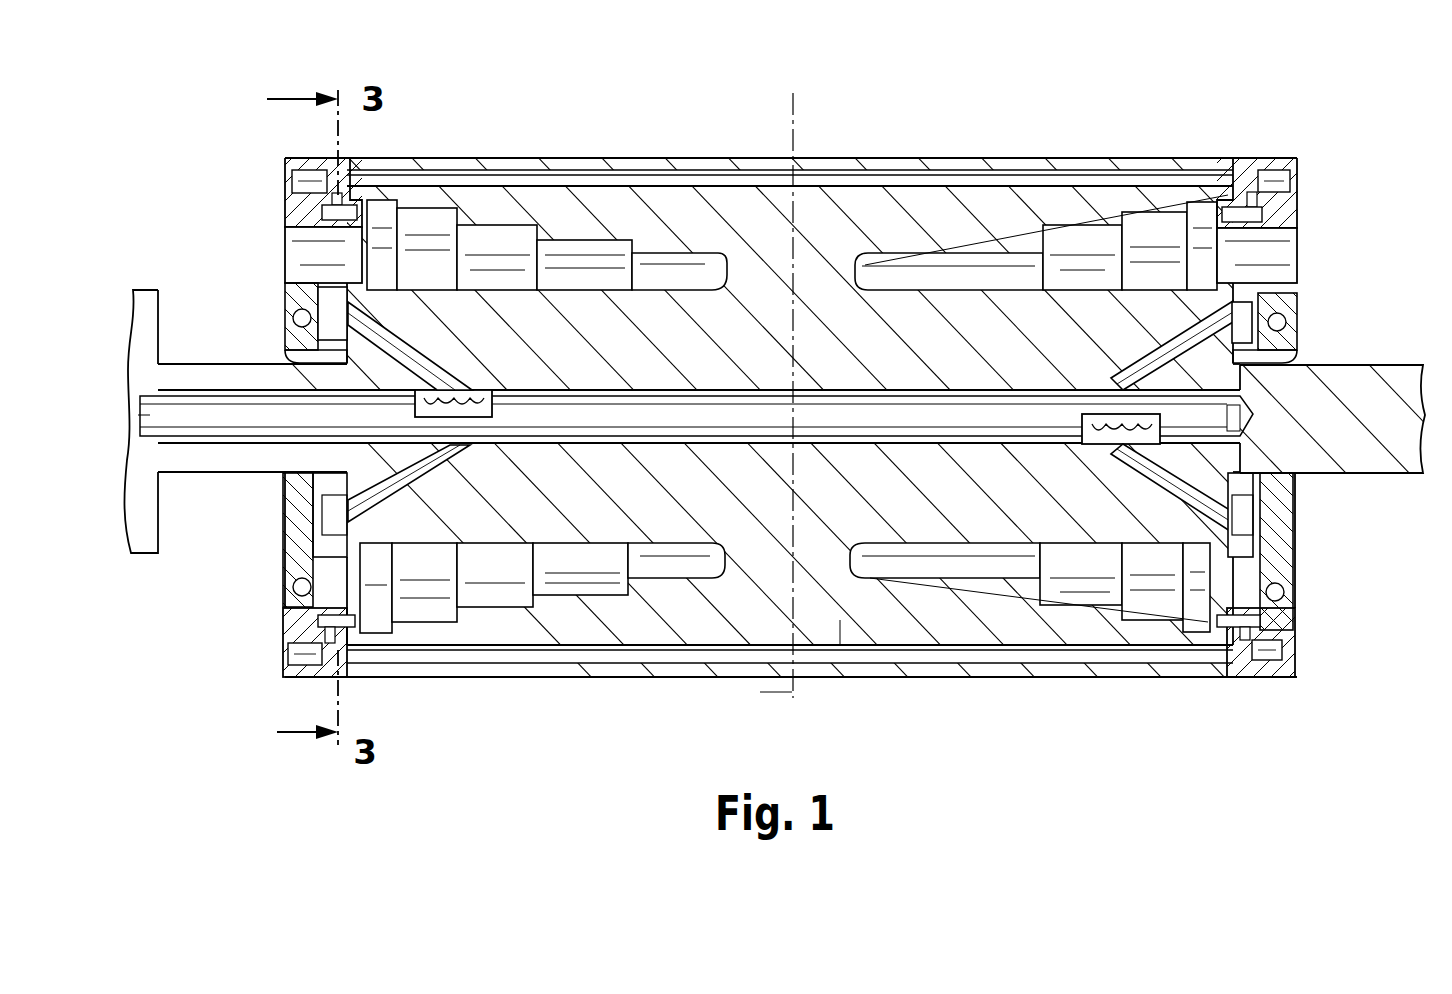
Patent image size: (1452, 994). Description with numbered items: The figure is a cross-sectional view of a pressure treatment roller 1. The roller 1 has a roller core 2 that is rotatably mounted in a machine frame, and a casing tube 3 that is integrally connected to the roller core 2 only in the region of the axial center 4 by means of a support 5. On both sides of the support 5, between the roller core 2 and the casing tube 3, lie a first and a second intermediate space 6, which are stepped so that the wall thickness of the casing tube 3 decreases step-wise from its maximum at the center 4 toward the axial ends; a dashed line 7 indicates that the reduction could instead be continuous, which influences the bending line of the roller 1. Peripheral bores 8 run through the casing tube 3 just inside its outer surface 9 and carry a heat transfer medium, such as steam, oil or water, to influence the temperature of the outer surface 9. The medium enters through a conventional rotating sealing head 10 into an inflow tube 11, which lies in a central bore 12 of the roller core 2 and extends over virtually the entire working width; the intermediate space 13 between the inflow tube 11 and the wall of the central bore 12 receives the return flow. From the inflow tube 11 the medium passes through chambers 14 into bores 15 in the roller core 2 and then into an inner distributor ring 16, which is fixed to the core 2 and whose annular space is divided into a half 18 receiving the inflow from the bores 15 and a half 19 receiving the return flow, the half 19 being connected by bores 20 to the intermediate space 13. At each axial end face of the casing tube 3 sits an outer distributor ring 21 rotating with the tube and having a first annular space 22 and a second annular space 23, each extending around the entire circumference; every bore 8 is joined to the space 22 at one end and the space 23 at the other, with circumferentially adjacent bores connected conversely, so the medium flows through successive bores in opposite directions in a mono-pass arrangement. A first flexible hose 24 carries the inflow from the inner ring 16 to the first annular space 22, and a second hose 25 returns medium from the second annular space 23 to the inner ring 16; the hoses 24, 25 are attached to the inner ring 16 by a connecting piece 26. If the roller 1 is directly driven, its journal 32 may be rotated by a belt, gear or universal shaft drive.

The pressure treatment roller 1 is at (845, 119).
The roller core 2 is at (905, 505).
The casing tube 3 is at (622, 615).
The axial center 4 is at (765, 692).
The support 5 is at (840, 620).
The intermediate space 6 is at (1003, 575).
The dashed line 7 is at (1012, 245).
The peripheral bores 8 is at (500, 177).
The outer surface 9 is at (661, 155).
The rotating sealing head 10 is at (148, 292).
The inflow tube 11 is at (205, 415).
The central bore 12 is at (706, 380).
The intermediate space 13 is at (823, 380).
The chambers 14 is at (482, 390).
The bores 15 is at (413, 356).
The inner distributor ring 16 is at (295, 262).
The half 18 is at (305, 318).
The half 19 is at (330, 515).
The bores 20 is at (395, 475).
The outer distributor ring 21 is at (305, 190).
The first annular space 22 is at (295, 655).
The second annular space 23 is at (355, 640).
The first hose 24 is at (290, 548).
The second hose 25 is at (1296, 556).
The connecting piece 26 is at (290, 350).
The journal 32 is at (1380, 372).